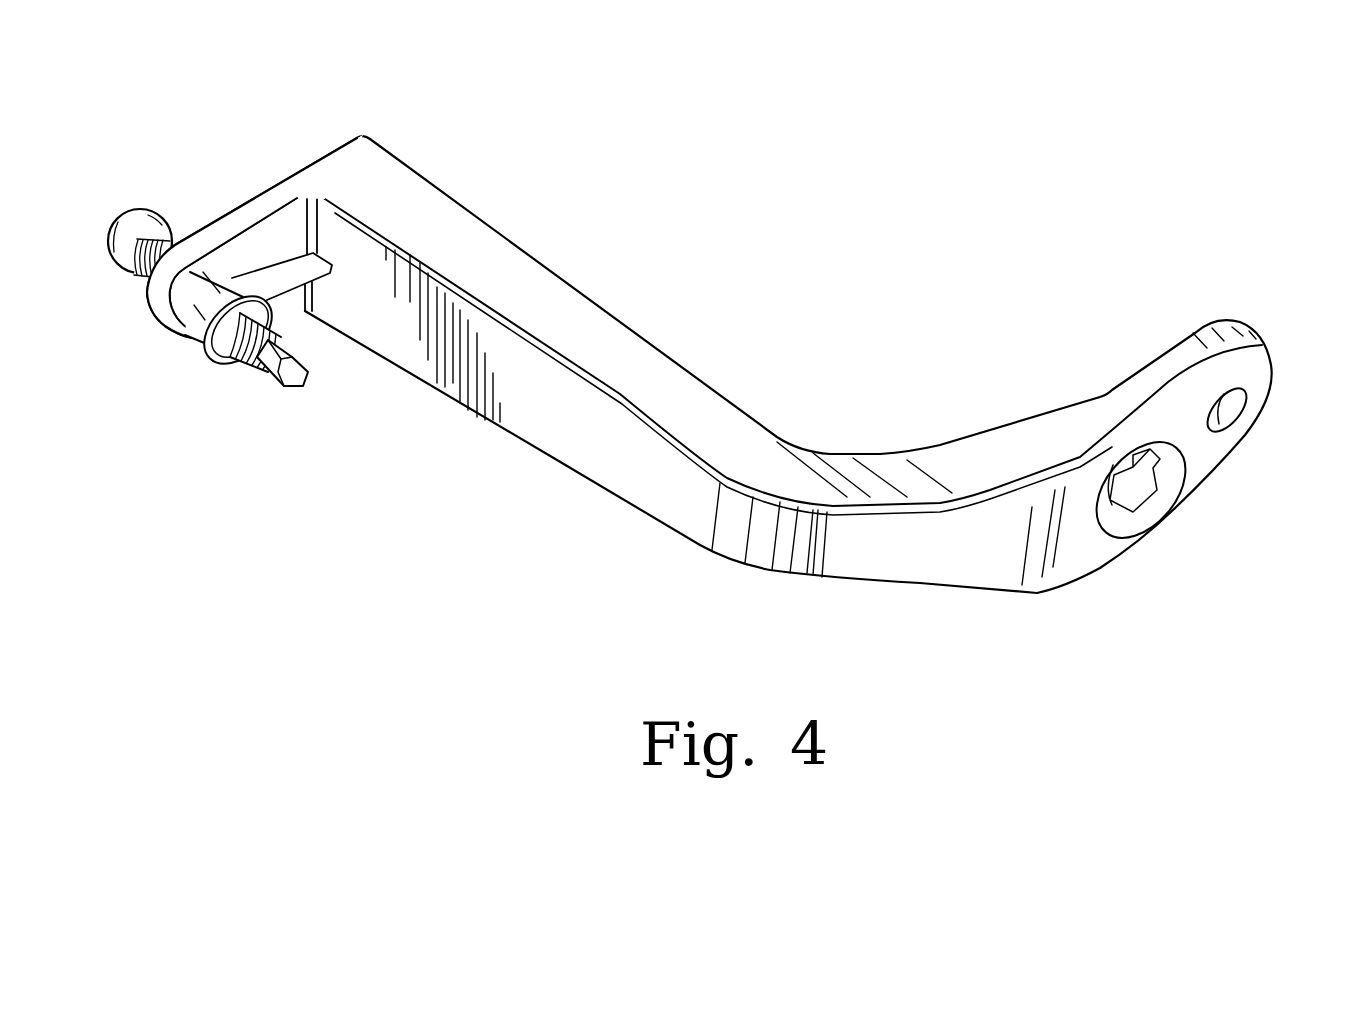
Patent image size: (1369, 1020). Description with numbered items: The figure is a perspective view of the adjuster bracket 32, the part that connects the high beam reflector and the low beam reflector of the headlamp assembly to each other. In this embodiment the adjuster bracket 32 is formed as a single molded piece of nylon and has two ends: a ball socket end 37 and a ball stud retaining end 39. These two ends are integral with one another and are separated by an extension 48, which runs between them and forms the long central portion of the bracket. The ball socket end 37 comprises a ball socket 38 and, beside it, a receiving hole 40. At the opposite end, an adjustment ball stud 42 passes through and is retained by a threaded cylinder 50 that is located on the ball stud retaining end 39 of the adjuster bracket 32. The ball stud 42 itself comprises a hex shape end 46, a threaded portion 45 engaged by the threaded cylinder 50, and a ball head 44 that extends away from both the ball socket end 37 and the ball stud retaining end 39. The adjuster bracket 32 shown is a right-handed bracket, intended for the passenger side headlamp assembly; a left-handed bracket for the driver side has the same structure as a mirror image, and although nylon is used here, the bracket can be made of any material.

The adjuster bracket 32 is at (752, 375).
The ball socket end 37 is at (1218, 451).
The ball socket 38 is at (1140, 522).
The ball stud retaining end 39 is at (228, 226).
The receiving hole 40 is at (1237, 408).
The adjustment ball stud 42 is at (217, 295).
The ball head 44 is at (128, 225).
The threaded portion 45 is at (243, 343).
The hex shape end 46 is at (293, 383).
The extension 48 is at (522, 287).
The threaded cylinder 50 is at (200, 313).